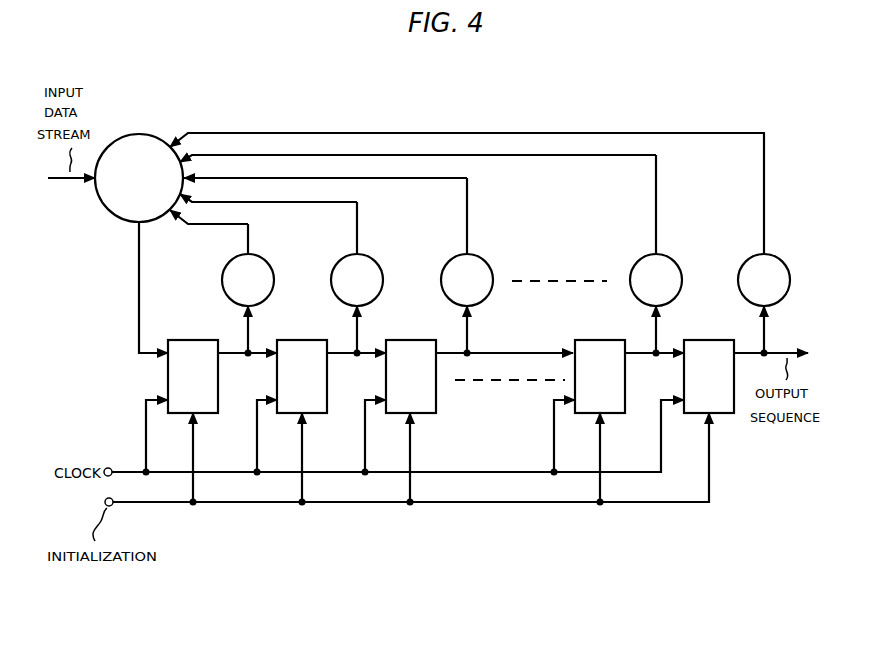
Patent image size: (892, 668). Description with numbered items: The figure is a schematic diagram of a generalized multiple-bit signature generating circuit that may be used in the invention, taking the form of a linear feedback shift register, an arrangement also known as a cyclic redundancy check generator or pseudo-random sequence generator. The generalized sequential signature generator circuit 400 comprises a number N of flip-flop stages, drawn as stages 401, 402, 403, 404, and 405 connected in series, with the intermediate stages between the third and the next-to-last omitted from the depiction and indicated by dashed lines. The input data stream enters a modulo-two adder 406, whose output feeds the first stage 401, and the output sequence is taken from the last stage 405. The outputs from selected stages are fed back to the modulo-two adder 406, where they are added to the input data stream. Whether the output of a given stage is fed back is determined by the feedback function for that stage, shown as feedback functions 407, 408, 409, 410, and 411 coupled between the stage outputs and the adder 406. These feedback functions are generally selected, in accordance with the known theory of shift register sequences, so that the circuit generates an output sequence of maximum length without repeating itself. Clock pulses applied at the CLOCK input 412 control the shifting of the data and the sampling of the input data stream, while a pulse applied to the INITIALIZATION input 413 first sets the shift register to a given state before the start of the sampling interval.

The generalized sequential signature generator circuit 400 is at (453, 117).
The flip-flop stage X1 401 is at (212, 413).
The flip-flop stage X2 402 is at (321, 413).
The flip-flop stage X3 403 is at (430, 413).
The flip-flop stage XN-1 404 is at (619, 413).
The flip-flop stage XN 405 is at (728, 413).
The modulo-2 adder 406 is at (112, 213).
The feedback function h1 407 is at (226, 261).
The feedback function h2 408 is at (336, 261).
The feedback function h3 409 is at (445, 261).
The feedback function hN-1 410 is at (634, 261).
The feedback function hN 411 is at (756, 261).
The CLOCK input 412 is at (115, 468).
The INITIALIZATION input 413 is at (118, 505).